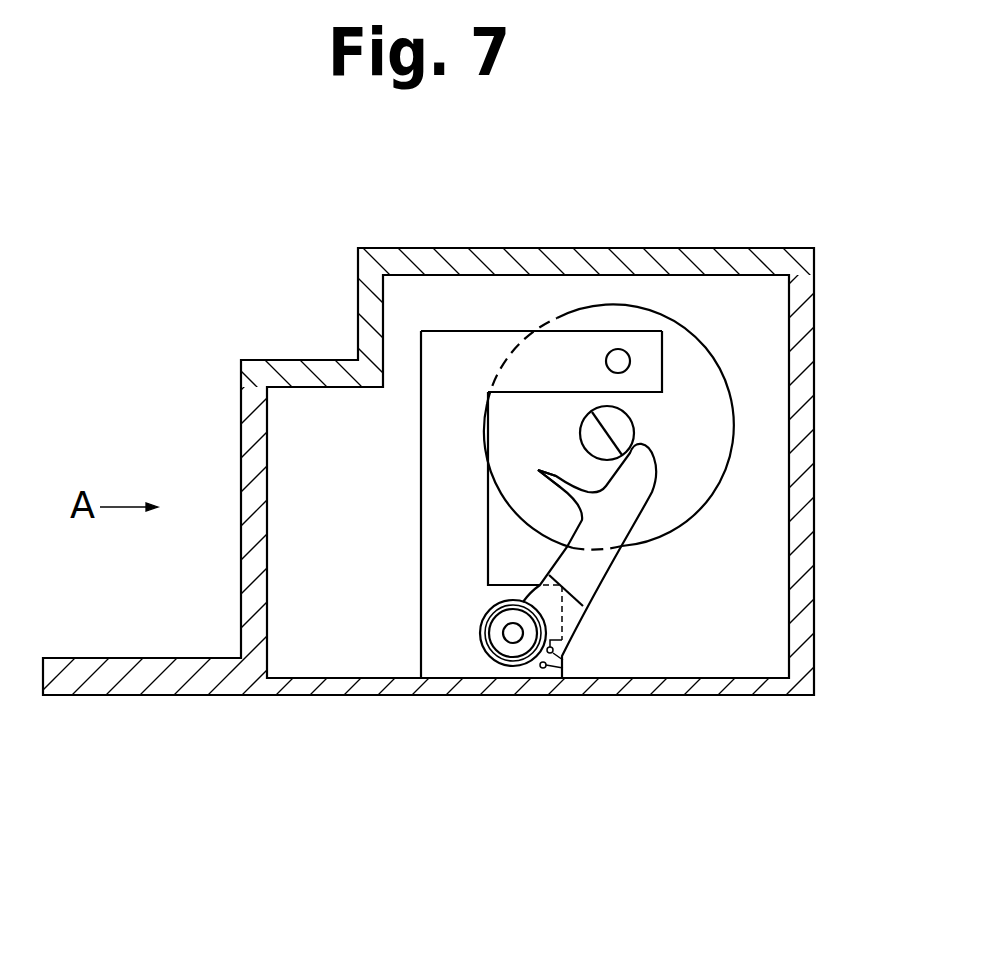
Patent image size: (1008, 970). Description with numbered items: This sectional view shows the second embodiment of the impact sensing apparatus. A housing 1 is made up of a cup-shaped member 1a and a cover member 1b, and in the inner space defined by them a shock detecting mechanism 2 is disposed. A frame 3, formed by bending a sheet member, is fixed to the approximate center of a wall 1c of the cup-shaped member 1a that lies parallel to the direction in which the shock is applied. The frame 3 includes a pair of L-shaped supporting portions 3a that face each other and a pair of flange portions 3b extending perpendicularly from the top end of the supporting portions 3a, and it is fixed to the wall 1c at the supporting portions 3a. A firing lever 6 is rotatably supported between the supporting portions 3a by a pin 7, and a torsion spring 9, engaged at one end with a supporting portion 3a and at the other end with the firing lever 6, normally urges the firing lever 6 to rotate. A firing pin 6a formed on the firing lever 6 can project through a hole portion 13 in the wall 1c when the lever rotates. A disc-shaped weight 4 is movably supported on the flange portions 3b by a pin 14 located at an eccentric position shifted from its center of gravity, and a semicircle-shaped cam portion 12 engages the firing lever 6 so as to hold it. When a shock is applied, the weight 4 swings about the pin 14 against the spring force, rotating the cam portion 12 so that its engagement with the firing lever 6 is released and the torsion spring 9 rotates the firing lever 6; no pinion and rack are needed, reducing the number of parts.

The housing 1 is at (350, 313).
The cup-shaped member 1a is at (252, 590).
The cover member 1b is at (283, 370).
The wall 1c is at (692, 688).
The shock detecting mechanism 2 is at (690, 538).
The frame 3 is at (416, 462).
The supporting portion 3a is at (442, 582).
The flange portion 3b is at (553, 350).
The weight 4 is at (682, 500).
The firing lever 6 is at (664, 467).
The firing pin 6a is at (562, 485).
The pin 7 is at (513, 636).
The torsion spring 9 is at (543, 668).
The cam portion 12 is at (600, 446).
The hole portion 13 is at (380, 687).
The pin 14 is at (620, 350).